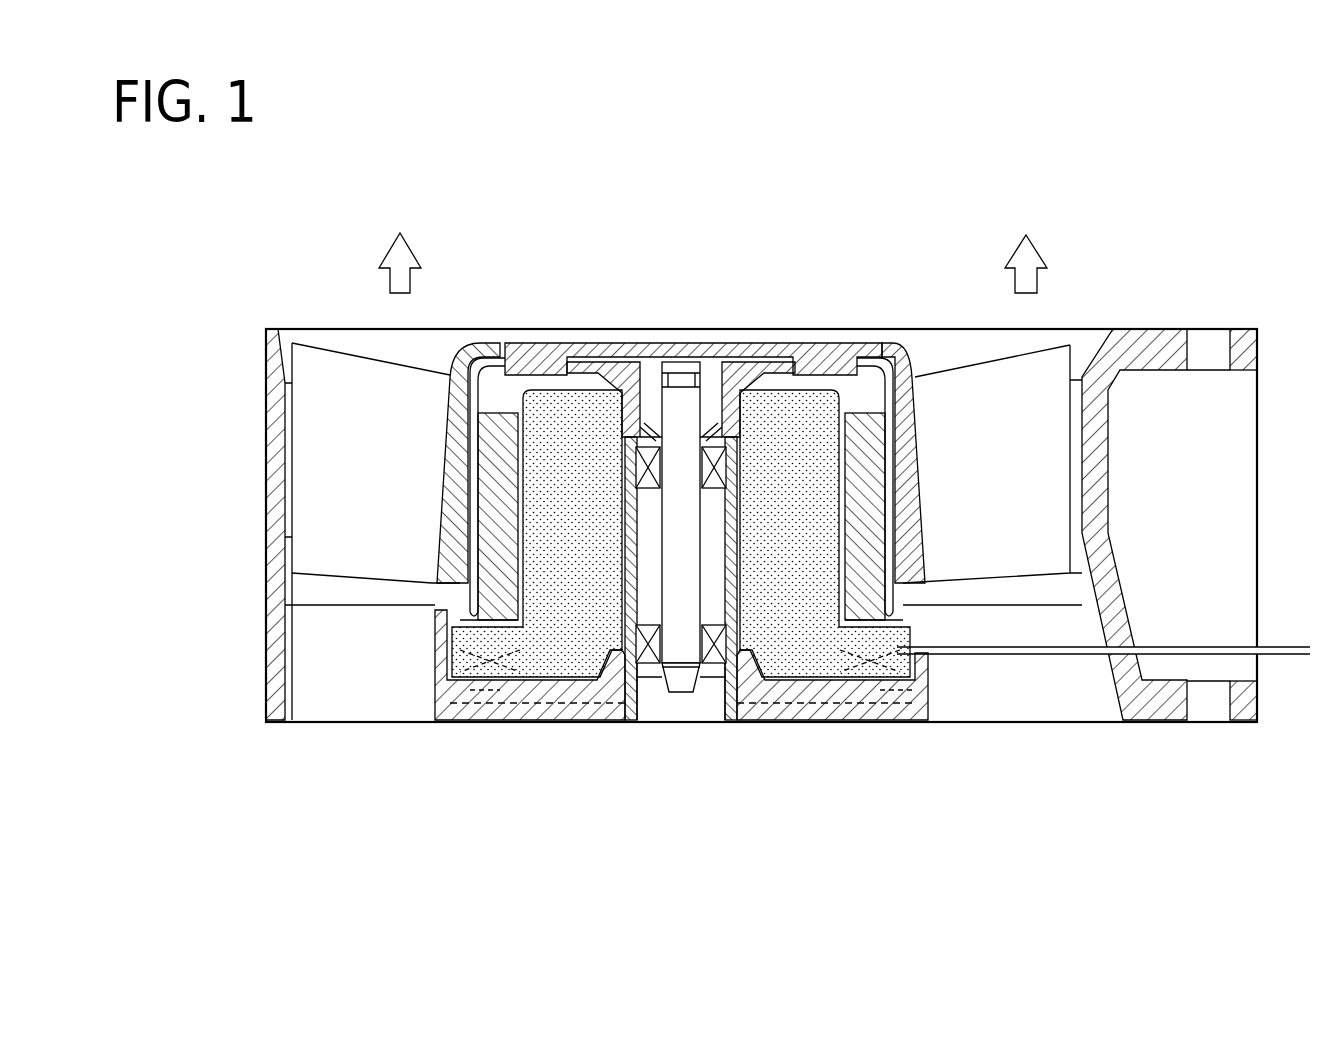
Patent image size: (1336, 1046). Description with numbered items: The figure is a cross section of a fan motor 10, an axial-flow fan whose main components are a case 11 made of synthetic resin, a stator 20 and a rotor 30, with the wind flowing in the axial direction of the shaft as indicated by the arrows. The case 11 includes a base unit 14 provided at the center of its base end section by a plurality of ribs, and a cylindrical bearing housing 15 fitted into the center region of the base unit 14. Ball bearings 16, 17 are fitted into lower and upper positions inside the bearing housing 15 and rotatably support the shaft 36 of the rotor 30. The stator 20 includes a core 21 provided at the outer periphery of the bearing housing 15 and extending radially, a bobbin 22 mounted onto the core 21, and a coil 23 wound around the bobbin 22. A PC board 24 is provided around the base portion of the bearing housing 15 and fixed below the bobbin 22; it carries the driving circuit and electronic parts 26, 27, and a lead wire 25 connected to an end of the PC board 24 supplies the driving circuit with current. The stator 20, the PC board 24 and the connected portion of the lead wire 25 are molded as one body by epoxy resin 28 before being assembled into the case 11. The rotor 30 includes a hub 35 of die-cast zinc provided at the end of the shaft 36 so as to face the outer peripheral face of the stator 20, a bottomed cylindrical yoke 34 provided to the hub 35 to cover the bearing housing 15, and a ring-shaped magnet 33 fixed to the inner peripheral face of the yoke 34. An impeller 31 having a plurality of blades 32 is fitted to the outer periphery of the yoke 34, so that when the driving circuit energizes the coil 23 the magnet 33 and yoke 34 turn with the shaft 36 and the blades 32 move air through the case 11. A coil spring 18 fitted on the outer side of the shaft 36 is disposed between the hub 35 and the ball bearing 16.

The fan motor 10 is at (1210, 262).
The case 11 is at (250, 362).
The base unit 14 is at (509, 722).
The bearing housing 15 is at (656, 722).
The ball bearing 16 is at (722, 445).
The ball bearing 17 is at (712, 662).
The coil spring 18 is at (653, 420).
The stator 20 is at (881, 347).
The core 21 is at (828, 392).
The bobbin 22 is at (519, 390).
The coil 23 is at (585, 722).
The PC board 24 is at (907, 722).
The lead wire 25 is at (1018, 655).
The electronic part 26 is at (537, 722).
The electronic part 27 is at (485, 722).
The epoxy resin 28 is at (860, 722).
The rotor 30 is at (561, 327).
The impeller 31 is at (872, 393).
The blade 32 is at (982, 382).
The magnet 33 is at (488, 418).
The yoke 34 is at (438, 430).
The hub 35 is at (732, 385).
The shaft 36 is at (691, 652).